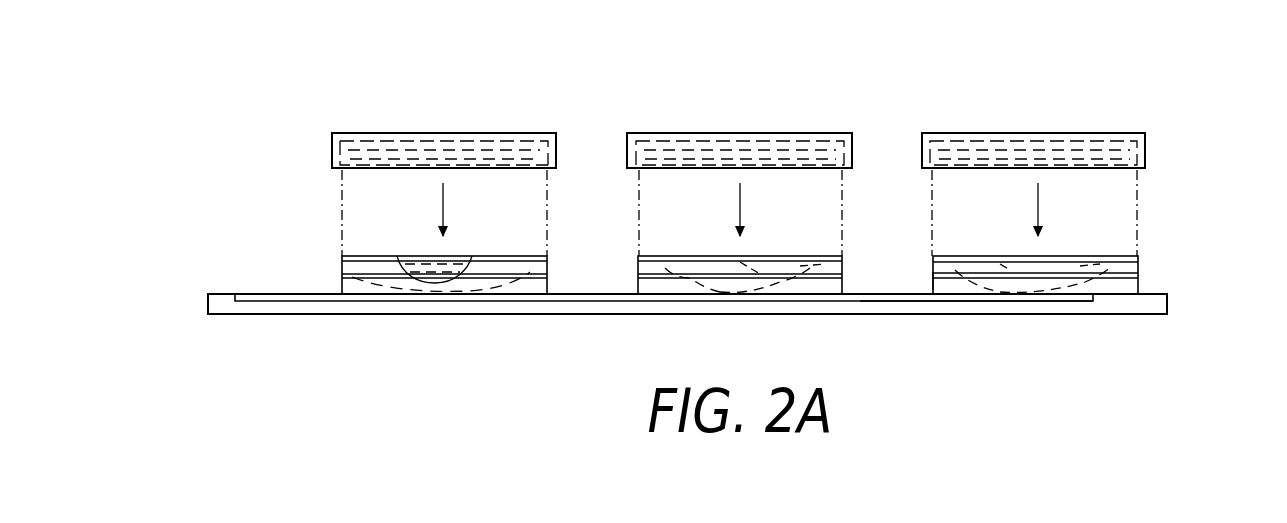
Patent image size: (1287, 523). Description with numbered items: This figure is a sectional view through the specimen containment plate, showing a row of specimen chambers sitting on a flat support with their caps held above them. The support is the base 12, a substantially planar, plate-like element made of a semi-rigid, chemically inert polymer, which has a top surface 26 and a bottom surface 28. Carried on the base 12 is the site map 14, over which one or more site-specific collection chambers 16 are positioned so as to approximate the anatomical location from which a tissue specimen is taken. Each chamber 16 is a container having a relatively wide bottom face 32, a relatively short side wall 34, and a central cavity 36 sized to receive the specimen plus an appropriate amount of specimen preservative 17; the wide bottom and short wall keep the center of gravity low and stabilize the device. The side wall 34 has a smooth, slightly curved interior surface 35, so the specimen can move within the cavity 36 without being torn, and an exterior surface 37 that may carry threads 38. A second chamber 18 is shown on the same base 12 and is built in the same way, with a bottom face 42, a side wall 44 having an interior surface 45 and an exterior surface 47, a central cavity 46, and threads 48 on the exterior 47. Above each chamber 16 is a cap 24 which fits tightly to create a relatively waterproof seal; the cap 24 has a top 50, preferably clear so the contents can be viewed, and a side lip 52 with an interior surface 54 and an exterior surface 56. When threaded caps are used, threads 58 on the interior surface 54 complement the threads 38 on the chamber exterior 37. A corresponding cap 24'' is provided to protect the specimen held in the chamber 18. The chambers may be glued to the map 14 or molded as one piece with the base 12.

The base 12 is at (1135, 329).
The site map 14 is at (888, 301).
The site-specific collection chamber 16 is at (558, 275).
The specimen preservative 17 is at (465, 258).
The chamber 18 is at (1165, 277).
The cap 24 is at (733, 104).
The cap 24'' is at (1077, 107).
The top surface 26 is at (229, 294).
The bottom surface 28 is at (302, 315).
The bottom face 32 is at (768, 301).
The side wall 34 is at (338, 285).
The interior surface 35 is at (845, 268).
The central cavity 36 is at (748, 265).
The exterior surface 37 is at (680, 301).
The threads 38 is at (810, 262).
The bottom face 42 is at (1057, 301).
The side wall 44 is at (935, 278).
The interior surface 45 is at (1000, 296).
The central cavity 46 is at (1055, 265).
The exterior surface 47 is at (1140, 270).
The threads 48 is at (1108, 275).
The top 50 is at (452, 133).
The side lip 52 is at (332, 158).
The interior surface 54 is at (345, 180).
The exterior surface 56 is at (645, 175).
The threads 58 is at (332, 135).